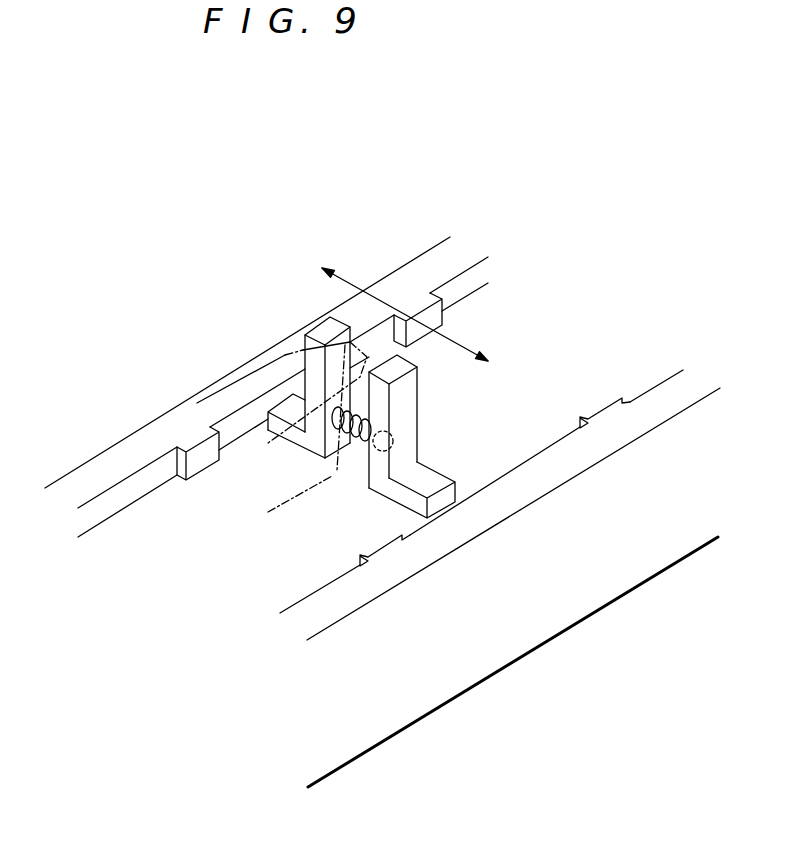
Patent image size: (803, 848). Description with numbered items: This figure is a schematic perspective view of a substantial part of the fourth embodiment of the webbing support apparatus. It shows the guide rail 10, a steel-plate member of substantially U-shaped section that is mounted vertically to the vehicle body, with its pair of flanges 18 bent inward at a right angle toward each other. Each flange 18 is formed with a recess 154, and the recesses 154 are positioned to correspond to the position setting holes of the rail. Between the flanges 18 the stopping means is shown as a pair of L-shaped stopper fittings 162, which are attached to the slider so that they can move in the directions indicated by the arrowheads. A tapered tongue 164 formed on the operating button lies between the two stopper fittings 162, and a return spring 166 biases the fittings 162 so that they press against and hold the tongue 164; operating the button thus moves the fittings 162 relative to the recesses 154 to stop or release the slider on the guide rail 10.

The guide rail 10 is at (383, 253).
The flanges 18 is at (150, 432).
The recess 154 is at (243, 428).
The L-shaped stopper fittings 162 is at (323, 332).
The tapered tongue 164 is at (247, 373).
The return spring 166 is at (345, 441).